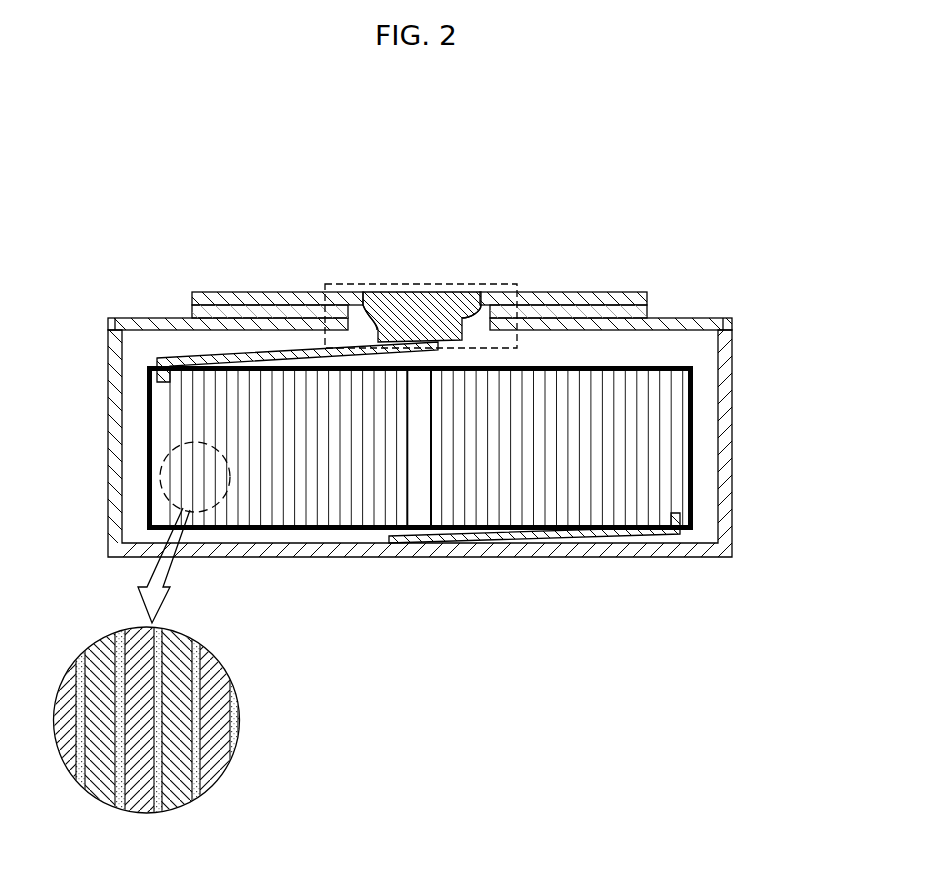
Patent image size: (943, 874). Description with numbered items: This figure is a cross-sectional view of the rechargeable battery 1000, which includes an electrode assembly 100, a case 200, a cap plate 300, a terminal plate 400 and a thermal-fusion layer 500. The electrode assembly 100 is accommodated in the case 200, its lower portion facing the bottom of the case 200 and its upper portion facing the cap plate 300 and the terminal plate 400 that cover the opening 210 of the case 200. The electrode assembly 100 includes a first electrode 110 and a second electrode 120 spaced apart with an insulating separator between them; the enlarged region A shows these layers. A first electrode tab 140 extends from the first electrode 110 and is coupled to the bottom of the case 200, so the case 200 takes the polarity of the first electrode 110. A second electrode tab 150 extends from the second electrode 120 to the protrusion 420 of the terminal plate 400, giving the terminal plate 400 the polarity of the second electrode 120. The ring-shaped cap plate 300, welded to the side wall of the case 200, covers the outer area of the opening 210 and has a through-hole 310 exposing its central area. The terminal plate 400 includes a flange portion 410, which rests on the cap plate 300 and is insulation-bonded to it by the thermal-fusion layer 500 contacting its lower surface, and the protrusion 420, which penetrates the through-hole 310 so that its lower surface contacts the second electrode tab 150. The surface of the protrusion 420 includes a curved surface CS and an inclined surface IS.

The rechargeable battery 1000 is at (441, 173).
The electrode assembly 100 is at (342, 487).
The first electrode 110 is at (139, 810).
The second electrode 120 is at (177, 810).
The first electrode tab 140 is at (633, 538).
The second electrode tab 150 is at (216, 353).
The case 200 is at (736, 516).
The opening 210 is at (599, 325).
The cap plate 300 is at (692, 319).
The through-hole 310 is at (464, 325).
The terminal plate 400 is at (282, 291).
The flange portion 410 is at (532, 294).
The protrusion 420 is at (429, 327).
The thermal-fusion layer 500 is at (308, 310).
The region A (enlarged terminal region) A is at (335, 284).
The curved surface CS is at (379, 326).
The inclined surface IS is at (382, 324).